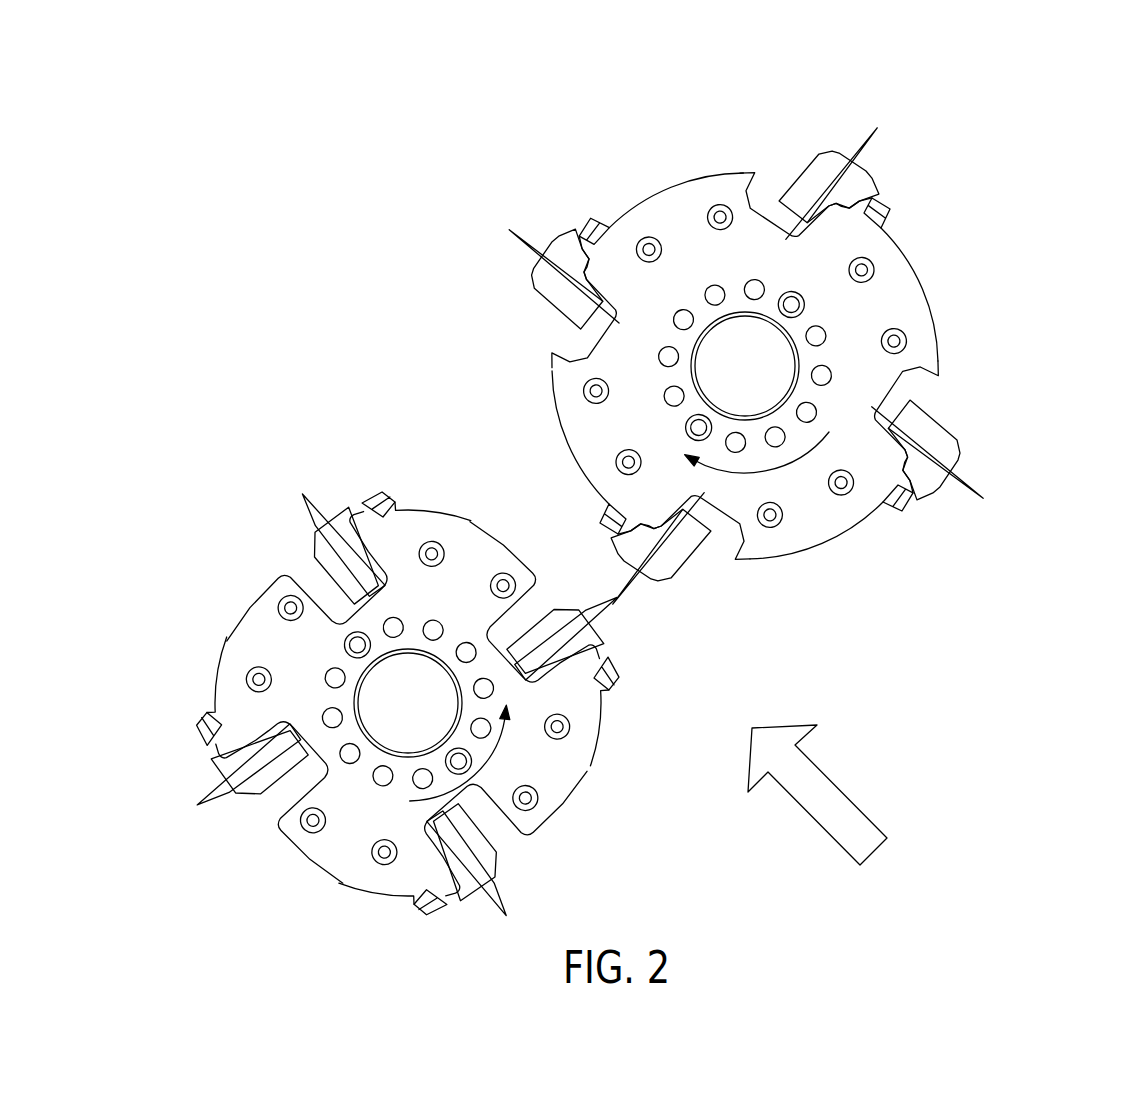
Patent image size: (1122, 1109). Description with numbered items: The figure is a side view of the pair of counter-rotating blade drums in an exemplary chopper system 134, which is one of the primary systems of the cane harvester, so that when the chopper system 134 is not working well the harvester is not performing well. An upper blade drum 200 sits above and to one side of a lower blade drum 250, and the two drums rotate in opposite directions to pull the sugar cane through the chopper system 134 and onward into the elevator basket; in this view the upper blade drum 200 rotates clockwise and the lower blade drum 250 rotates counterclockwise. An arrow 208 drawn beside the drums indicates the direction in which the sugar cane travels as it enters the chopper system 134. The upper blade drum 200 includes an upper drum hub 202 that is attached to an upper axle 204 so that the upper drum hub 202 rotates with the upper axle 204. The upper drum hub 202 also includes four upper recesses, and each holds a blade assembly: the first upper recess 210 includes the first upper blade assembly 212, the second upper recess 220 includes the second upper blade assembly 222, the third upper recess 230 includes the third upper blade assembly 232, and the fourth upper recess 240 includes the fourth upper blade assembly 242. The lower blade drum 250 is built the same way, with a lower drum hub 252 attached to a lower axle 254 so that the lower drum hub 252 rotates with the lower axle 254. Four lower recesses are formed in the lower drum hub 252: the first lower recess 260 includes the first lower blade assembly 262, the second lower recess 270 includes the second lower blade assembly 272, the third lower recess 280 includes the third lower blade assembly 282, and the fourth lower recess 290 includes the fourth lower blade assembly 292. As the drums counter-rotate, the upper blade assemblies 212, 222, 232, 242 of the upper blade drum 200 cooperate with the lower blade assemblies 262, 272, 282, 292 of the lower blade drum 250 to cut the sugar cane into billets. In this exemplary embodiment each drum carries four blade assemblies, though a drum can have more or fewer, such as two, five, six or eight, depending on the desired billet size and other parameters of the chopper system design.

The chopper system 134 is at (330, 210).
The upper blade drum 200 is at (597, 158).
The upper drum hub 202 is at (885, 276).
The upper axle 204 is at (763, 360).
The arrow 208 is at (863, 812).
The first upper recess 210 is at (718, 559).
The first upper blade assembly 212 is at (698, 581).
The second upper recess 220 is at (545, 343).
The second upper blade assembly 222 is at (513, 285).
The third upper recess 230 is at (772, 165).
The third upper blade assembly 232 is at (817, 142).
The fourth upper recess 240 is at (952, 405).
The fourth upper blade assembly 242 is at (990, 437).
The lower blade drum 250 is at (197, 483).
The lower drum hub 252 is at (228, 677).
The lower axle 254 is at (380, 700).
The first lower recess 260 is at (548, 583).
The first lower blade assembly 262 is at (620, 641).
The second lower recess 270 is at (298, 567).
The second lower blade assembly 272 is at (317, 472).
The third lower recess 280 is at (262, 822).
The third lower blade assembly 282 is at (185, 783).
The fourth lower recess 290 is at (515, 822).
The fourth lower blade assembly 292 is at (512, 881).